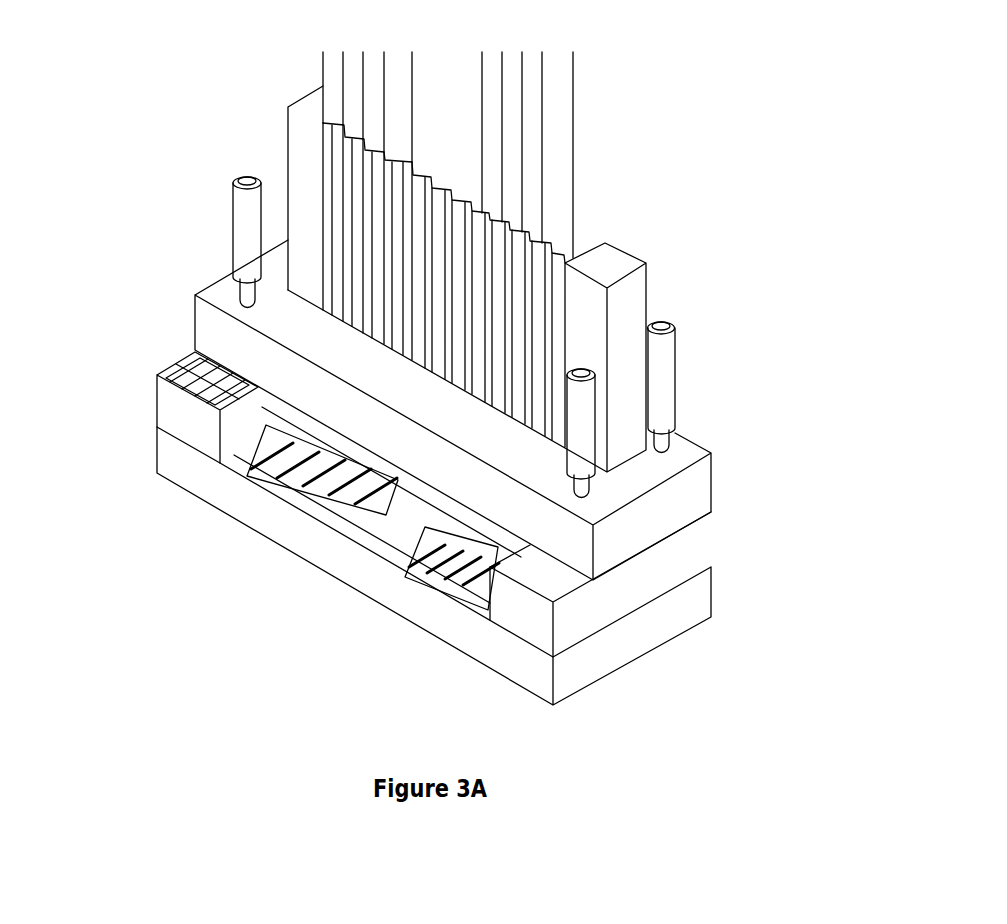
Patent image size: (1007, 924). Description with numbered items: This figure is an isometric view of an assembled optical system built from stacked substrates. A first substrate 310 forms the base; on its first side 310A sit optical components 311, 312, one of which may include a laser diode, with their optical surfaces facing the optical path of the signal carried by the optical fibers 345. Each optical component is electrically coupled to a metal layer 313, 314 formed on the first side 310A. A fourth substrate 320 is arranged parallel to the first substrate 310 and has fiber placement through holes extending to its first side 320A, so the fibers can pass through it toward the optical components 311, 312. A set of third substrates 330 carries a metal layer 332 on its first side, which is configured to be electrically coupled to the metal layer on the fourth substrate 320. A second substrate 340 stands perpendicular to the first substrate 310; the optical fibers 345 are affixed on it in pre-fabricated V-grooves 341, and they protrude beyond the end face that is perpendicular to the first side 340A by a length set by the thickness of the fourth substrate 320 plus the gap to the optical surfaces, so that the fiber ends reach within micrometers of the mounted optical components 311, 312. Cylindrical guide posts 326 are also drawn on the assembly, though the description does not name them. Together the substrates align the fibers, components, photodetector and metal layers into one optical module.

The first substrate 310 is at (157, 460).
The first side of the first substrate 310A is at (383, 533).
The optical component 311 is at (300, 433).
The optical component 312 is at (513, 553).
The metal layer 313 is at (287, 455).
The metal layer 314 is at (510, 555).
The fourth substrate 320 is at (668, 512).
The first side of the fourth substrate 320A is at (680, 457).
The guide posts 326 is at (250, 277).
The third substrate 330 is at (180, 410).
The metal layer 332 is at (185, 360).
The second substrate 340 is at (628, 300).
The first side of the second substrate 340A is at (310, 164).
The V-groove 341 is at (453, 228).
The optical fiber 345 is at (337, 150).